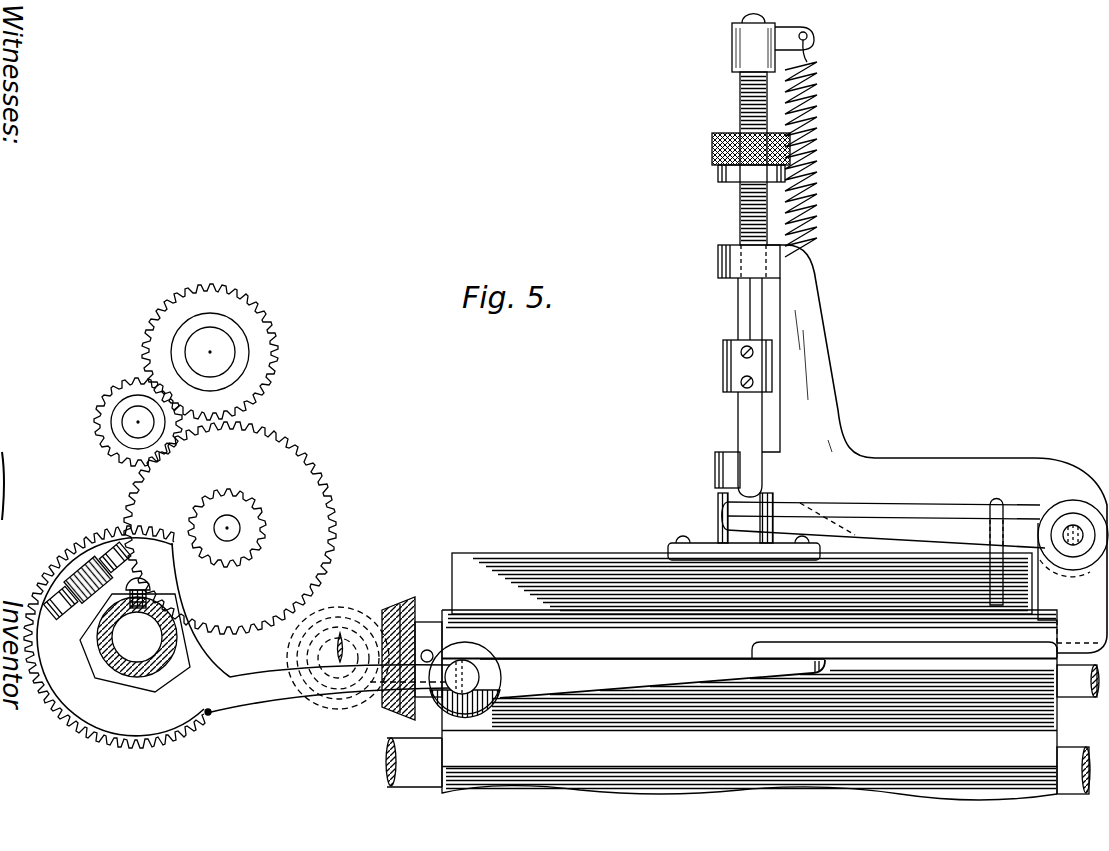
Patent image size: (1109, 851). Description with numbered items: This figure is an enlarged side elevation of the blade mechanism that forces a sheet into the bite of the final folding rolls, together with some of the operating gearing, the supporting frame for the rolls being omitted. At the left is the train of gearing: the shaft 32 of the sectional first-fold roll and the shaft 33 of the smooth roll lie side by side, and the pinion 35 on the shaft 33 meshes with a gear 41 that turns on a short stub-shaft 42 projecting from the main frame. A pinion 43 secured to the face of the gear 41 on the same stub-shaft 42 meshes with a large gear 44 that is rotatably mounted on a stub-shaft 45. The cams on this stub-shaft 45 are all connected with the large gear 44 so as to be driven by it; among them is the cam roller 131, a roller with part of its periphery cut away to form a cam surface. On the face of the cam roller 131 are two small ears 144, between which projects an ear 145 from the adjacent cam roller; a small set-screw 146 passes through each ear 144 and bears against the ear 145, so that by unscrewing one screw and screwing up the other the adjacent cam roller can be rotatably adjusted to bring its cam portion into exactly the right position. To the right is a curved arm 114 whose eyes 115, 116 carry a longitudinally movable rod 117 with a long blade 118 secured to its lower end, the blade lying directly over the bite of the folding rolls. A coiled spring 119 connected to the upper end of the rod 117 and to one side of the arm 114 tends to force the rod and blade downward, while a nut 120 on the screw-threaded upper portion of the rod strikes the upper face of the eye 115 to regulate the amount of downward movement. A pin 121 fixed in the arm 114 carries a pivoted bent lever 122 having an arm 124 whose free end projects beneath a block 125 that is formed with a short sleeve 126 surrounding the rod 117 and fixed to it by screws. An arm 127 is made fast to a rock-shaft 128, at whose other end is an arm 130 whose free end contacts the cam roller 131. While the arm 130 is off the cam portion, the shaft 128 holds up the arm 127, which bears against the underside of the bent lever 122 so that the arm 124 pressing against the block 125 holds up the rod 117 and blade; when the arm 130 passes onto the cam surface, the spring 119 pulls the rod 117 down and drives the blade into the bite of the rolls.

The shaft 32 is at (216, 350).
The shaft 33 is at (137, 418).
The pinion 35 is at (108, 394).
The gear 41 is at (325, 496).
The stub-shaft 42 is at (240, 528).
The pinion 43 is at (240, 514).
The large gear 44 is at (124, 738).
The stub-shaft 45 is at (137, 637).
The curved arm 114 is at (889, 463).
The eye 115 is at (718, 256).
The eye 116 is at (716, 465).
The rod 117 is at (738, 305).
The blade 118 is at (582, 570).
The coiled spring 119 is at (814, 198).
The nut 120 is at (712, 150).
The pin 121 is at (1064, 534).
The bent lever 122 is at (904, 648).
The arm 124 is at (915, 505).
The block 125 is at (740, 408).
The sleeve portion 126 is at (723, 352).
The arm 127 is at (628, 668).
The rock-shaft 128 is at (468, 676).
The arm 130 is at (277, 692).
The cam roller 131 is at (192, 700).
The ears 144 is at (97, 552).
The ear 145 is at (112, 582).
The set-screw 146 is at (115, 548).